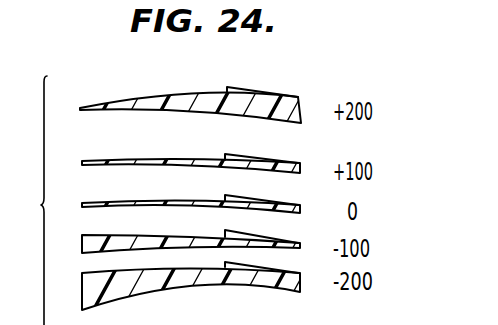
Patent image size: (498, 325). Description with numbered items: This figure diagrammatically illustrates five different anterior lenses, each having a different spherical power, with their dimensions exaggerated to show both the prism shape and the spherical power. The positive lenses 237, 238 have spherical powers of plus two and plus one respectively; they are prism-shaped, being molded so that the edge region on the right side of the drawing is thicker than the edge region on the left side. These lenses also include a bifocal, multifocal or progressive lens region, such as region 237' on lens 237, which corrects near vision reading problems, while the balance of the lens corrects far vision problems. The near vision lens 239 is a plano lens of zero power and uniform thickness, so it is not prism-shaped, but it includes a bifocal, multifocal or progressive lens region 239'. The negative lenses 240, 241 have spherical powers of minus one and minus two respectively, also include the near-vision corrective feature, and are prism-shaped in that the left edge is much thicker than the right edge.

The positive lens 237 is at (195, 107).
The bifocal, multifocal or progressive lens region 237' is at (262, 76).
The positive lens 238 is at (148, 158).
The near vision lens 239 is at (195, 214).
The bifocal, multifocal or progressive lens region 239' is at (272, 190).
The negative lens 240 is at (117, 233).
The negative lens 241 is at (125, 272).